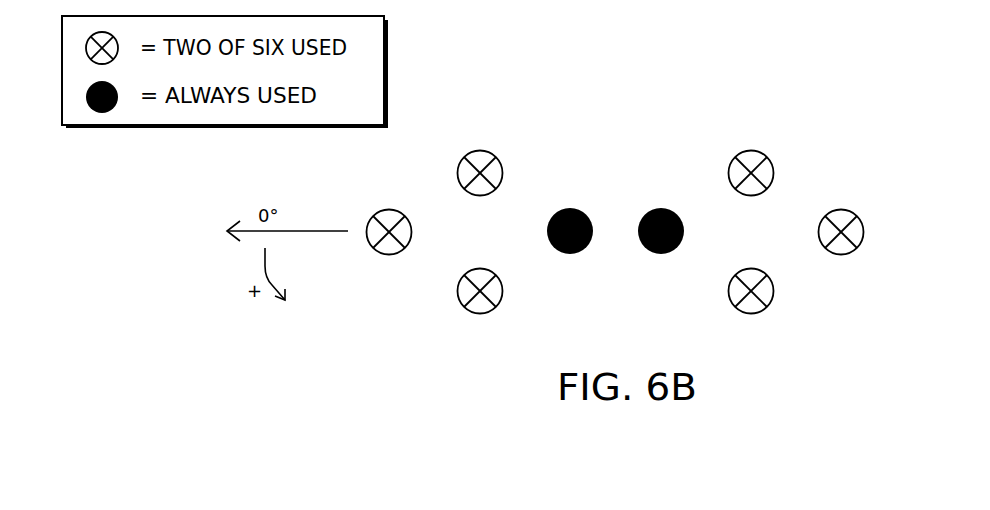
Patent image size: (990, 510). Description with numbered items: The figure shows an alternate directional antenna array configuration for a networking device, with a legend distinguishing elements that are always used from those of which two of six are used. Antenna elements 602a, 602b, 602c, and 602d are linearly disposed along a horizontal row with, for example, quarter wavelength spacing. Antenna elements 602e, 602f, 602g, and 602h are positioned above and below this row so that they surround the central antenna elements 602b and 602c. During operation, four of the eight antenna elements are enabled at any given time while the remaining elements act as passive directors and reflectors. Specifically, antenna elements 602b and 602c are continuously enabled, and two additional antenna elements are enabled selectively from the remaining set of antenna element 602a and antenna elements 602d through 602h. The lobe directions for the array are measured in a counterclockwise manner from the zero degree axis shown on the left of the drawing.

The antenna element 602a is at (861, 215).
The antenna element 602b is at (643, 214).
The antenna element 602c is at (552, 214).
The antenna element 602d is at (370, 215).
The antenna element 602e is at (733, 155).
The antenna element 602f is at (733, 309).
The antenna element 602g is at (461, 153).
The antenna element 602h is at (461, 309).